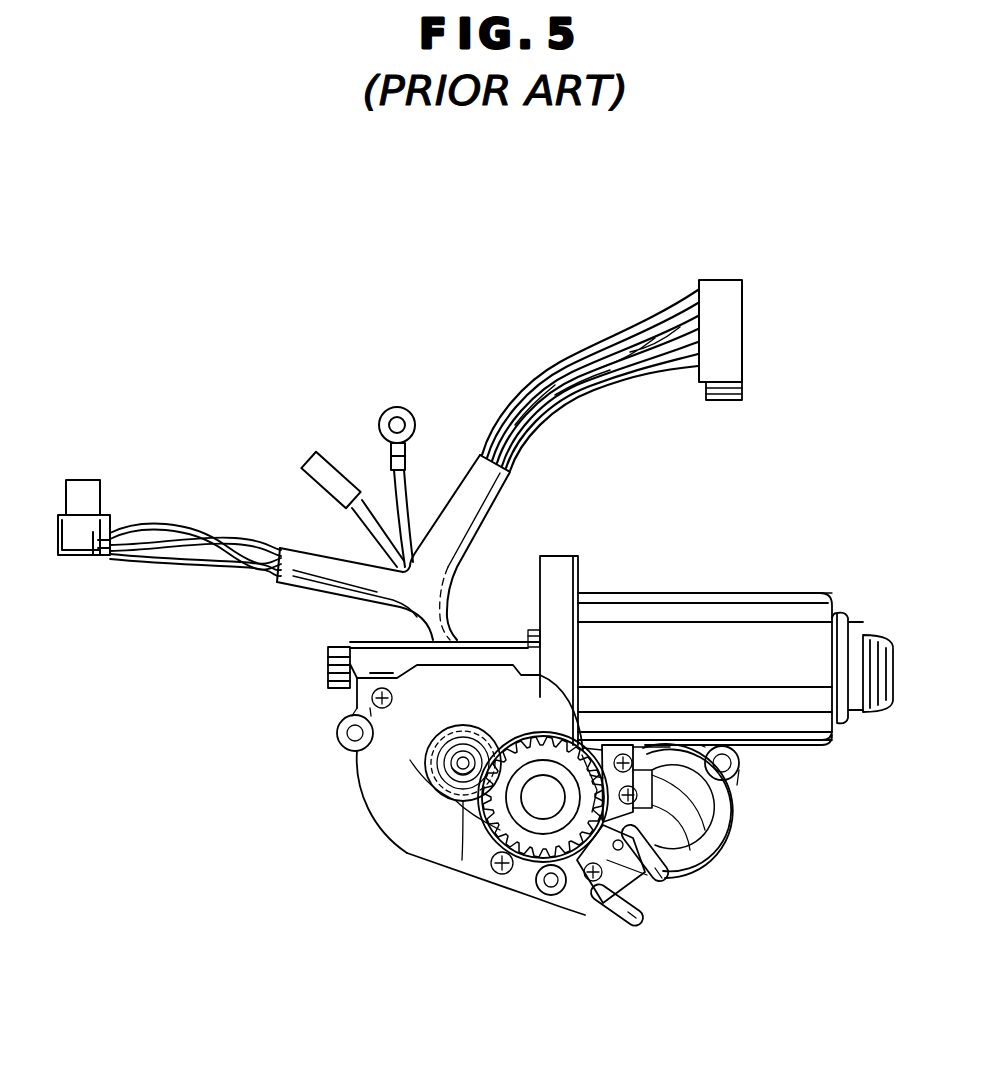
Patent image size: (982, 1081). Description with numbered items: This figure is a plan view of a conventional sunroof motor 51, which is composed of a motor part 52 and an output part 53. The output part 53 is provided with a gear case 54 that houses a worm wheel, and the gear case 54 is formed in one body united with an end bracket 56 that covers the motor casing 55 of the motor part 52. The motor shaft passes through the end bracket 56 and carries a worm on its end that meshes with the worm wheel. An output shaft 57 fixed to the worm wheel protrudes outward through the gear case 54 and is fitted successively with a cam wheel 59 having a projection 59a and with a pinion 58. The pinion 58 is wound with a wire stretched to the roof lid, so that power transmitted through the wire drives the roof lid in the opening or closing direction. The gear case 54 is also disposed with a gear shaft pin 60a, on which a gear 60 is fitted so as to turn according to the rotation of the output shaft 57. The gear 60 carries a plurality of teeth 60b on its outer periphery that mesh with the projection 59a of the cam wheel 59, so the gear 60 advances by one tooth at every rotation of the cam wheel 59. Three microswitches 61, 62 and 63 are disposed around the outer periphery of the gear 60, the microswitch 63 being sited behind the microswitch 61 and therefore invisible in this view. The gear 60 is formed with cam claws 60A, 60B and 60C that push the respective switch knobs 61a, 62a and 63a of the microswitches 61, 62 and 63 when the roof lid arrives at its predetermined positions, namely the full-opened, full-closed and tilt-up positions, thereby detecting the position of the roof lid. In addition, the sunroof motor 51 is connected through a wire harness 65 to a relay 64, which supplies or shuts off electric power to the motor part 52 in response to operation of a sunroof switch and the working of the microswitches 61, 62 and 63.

The sunroof motor 51 is at (804, 508).
The motor part 52 is at (707, 591).
The output part 53 is at (393, 840).
The gear case 54 is at (368, 769).
The motor casing 55 is at (820, 738).
The end bracket 56 is at (562, 558).
The output shaft 57 is at (460, 768).
The pinion 58 is at (437, 750).
The cam wheel 59 is at (430, 782).
The projection 59a is at (463, 735).
The gear 60 is at (598, 750).
The cam claw 60A is at (552, 892).
The cam claw 60B is at (582, 740).
The cam claw 60C is at (488, 805).
The gear shaft pin 60a is at (546, 812).
The teeth 60b is at (492, 825).
The microswitch 61 is at (647, 882).
The switch knob 61a is at (578, 905).
The microswitch 62 is at (722, 809).
The switch knob 62a is at (655, 812).
The microswitch 63 is at (687, 906).
The switch knob 63a is at (663, 906).
The relay 64 is at (718, 292).
The wire harness 65 is at (525, 390).